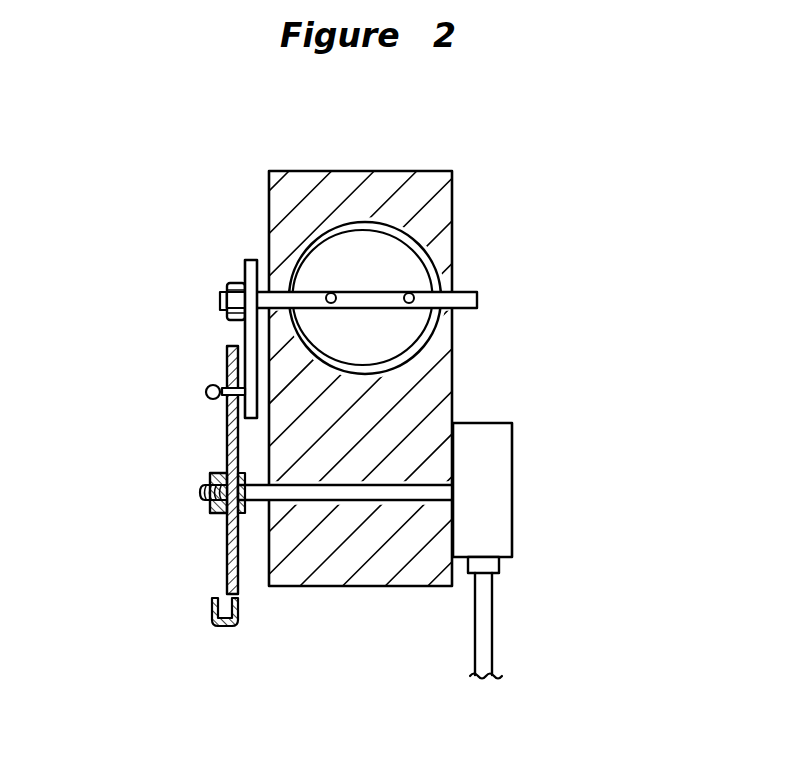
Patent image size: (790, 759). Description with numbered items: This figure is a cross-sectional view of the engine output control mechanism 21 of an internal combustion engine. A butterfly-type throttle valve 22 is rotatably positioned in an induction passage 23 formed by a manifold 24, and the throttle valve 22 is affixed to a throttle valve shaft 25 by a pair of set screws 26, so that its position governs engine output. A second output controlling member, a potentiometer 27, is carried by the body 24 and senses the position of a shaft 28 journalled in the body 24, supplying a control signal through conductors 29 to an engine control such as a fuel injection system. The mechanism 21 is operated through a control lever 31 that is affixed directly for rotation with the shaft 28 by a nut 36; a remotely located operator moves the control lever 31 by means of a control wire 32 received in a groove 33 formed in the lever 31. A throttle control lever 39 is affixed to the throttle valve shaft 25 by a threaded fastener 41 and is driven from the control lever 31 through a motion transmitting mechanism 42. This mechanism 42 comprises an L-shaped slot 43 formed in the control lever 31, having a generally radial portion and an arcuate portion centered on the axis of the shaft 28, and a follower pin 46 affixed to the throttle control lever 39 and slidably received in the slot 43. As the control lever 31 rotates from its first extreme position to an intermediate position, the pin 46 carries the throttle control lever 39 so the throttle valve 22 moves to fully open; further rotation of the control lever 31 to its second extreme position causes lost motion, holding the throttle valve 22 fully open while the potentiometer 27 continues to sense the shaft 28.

The engine output control mechanism 21 is at (542, 356).
The throttle valve 22 is at (430, 270).
The induction passage 23 is at (351, 223).
The manifold 24 is at (442, 212).
The throttle valve shaft 25 is at (463, 309).
The set screws 26 is at (331, 292).
The potentiometer 27 is at (498, 510).
The shaft 28 is at (398, 498).
The conductors 29 is at (521, 618).
The control lever 31 is at (227, 537).
The control wire 32 is at (222, 627).
The groove 33 is at (224, 627).
The nut 36 is at (212, 478).
The throttle control lever 39 is at (248, 260).
The threaded fastener 41 is at (228, 283).
The motion transmitting mechanism 42 is at (162, 377).
The L-shaped slot 43 is at (206, 398).
The follower pin 46 is at (209, 388).